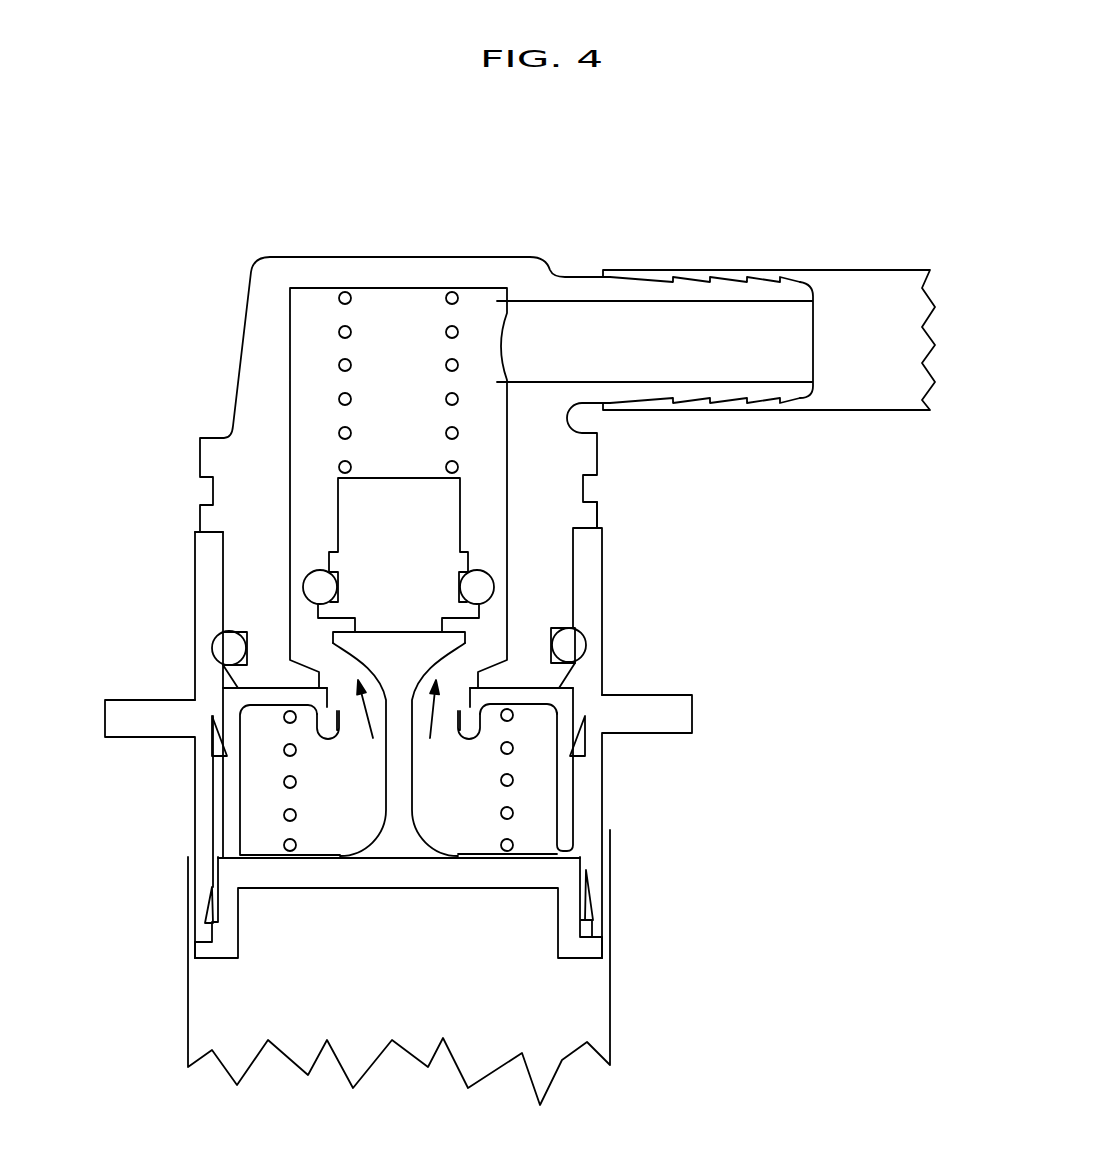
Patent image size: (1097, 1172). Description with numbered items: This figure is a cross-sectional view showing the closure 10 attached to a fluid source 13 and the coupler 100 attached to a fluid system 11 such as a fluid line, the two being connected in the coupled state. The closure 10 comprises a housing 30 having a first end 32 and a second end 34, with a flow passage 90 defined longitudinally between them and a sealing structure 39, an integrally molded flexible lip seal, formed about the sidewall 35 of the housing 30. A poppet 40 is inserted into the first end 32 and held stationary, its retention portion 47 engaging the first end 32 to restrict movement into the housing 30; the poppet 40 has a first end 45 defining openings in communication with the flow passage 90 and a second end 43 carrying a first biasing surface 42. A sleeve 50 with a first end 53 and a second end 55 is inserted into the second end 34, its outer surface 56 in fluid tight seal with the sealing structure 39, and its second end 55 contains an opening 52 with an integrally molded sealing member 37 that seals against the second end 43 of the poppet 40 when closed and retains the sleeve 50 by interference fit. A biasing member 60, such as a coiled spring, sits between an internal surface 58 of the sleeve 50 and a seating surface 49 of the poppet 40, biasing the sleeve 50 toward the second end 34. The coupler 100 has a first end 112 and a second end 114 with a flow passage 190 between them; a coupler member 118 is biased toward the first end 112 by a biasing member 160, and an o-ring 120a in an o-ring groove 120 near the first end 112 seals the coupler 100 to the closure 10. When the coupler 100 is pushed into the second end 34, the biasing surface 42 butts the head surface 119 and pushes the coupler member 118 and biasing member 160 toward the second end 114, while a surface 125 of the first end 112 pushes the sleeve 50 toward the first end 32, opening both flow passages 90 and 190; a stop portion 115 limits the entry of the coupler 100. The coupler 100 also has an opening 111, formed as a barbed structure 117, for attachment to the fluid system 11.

The coupler 100 is at (262, 207).
The second end of coupler 114 is at (352, 255).
The barbed structure 117 is at (752, 404).
The opening of coupler 111 is at (816, 330).
The fluid system 11 is at (896, 352).
The flow passage of coupler 190 is at (313, 422).
The biasing member 160 is at (452, 298).
The coupler member 118 is at (392, 477).
The second end of poppet 43 is at (335, 632).
The first biasing surface 42 is at (383, 631).
The head surface 119 is at (417, 633).
The opening 52 is at (357, 728).
The flow passage 90 is at (466, 803).
The housing 30 is at (195, 558).
The closure 10 is at (93, 687).
The second end of housing 34 is at (602, 530).
The stop portion 115 is at (587, 532).
The first end of housing 32 is at (610, 907).
The o-ring 120a is at (227, 648).
The o-ring groove 120 is at (568, 643).
The first end of coupler 112 is at (238, 688).
The surface of first end 125 is at (277, 690).
The outer surface of sleeve 56 is at (577, 700).
The second end of sleeve 55 is at (521, 685).
The sidewall of housing 35 is at (213, 807).
The biasing member 60 is at (286, 753).
The sealing member 37 is at (327, 738).
The seating surface 49 is at (472, 853).
The internal surface of sleeve 58 is at (540, 704).
The sealing structure 39 is at (223, 752).
The sleeve 50 is at (223, 835).
The first end of poppet 45 is at (212, 928).
The first end of sleeve 53 is at (577, 840).
The poppet 40 is at (392, 887).
The retention portion 47 is at (230, 960).
The fluid source 13 is at (402, 1015).